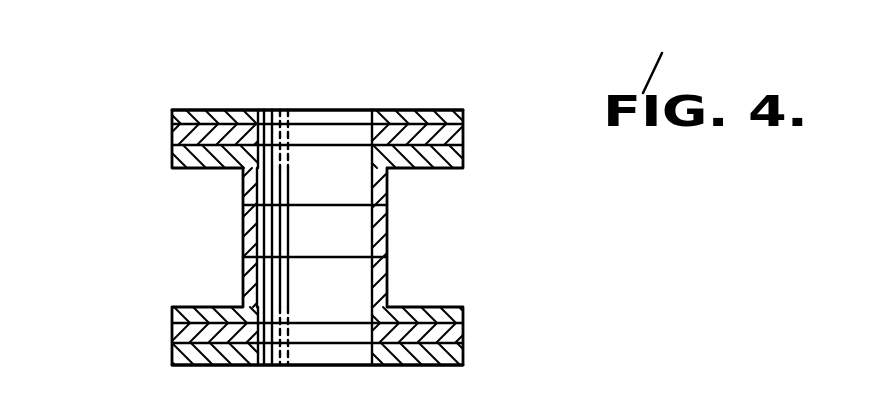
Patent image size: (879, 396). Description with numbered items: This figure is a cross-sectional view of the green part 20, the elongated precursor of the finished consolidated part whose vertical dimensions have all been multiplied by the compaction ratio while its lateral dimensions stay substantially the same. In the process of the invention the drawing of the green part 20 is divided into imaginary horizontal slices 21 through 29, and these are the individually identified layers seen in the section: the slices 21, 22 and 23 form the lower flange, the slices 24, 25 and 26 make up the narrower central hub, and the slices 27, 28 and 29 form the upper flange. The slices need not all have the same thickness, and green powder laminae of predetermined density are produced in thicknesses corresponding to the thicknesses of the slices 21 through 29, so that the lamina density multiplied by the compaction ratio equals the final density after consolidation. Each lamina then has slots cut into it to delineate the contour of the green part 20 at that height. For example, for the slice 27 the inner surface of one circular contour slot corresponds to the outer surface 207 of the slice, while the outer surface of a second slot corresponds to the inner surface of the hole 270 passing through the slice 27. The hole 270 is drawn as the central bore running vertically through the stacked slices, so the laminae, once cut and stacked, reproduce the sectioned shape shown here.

The green part 20 is at (215, 249).
The imaginary horizontal slice 21 is at (465, 347).
The imaginary horizontal slice 22 is at (172, 335).
The imaginary horizontal slice 23 is at (465, 313).
The imaginary horizontal slice 24 is at (390, 272).
The imaginary horizontal slice 25 is at (243, 228).
The imaginary horizontal slice 26 is at (388, 185).
The imaginary horizontal slice 27 is at (463, 153).
The imaginary horizontal slice 28 is at (463, 127).
The imaginary horizontal slice 29 is at (415, 110).
The outer surface 207 is at (172, 153).
The hole 270 is at (284, 130).